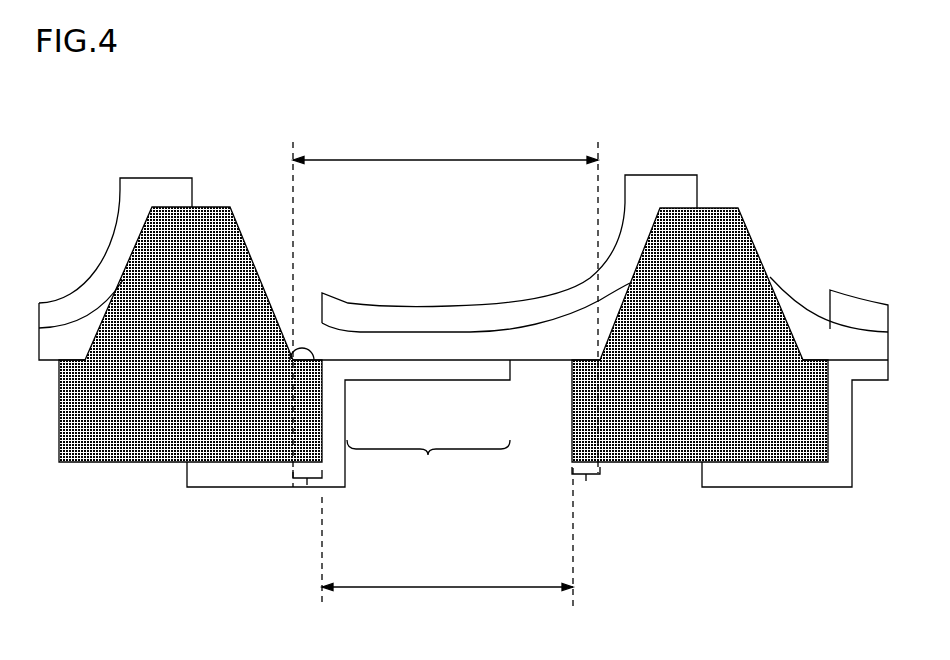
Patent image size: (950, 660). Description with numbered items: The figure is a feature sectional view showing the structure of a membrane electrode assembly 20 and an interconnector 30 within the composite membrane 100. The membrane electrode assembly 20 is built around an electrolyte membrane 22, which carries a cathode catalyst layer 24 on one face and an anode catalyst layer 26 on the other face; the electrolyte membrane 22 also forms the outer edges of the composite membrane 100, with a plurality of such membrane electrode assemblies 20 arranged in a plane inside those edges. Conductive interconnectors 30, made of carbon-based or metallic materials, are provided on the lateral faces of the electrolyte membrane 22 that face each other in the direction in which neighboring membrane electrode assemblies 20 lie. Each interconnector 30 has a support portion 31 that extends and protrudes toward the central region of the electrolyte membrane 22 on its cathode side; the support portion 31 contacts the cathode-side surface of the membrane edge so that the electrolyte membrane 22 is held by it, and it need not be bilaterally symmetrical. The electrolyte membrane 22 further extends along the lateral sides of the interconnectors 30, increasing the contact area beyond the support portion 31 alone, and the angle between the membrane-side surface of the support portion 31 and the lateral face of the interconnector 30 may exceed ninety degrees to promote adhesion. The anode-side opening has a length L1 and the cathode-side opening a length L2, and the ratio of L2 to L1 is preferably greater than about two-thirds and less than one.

The composite membrane 100 is at (228, 504).
The membrane electrode assembly 20 is at (428, 468).
The electrolyte membrane 22 is at (478, 347).
The cathode catalyst layer 24 is at (493, 370).
The anode catalyst layer 26 is at (412, 313).
The interconnector 30 is at (202, 238).
The support portion 31 is at (449, 493).
The length of anode-side opening L1 is at (445, 304).
The length of cathode-side opening L2 is at (447, 548).